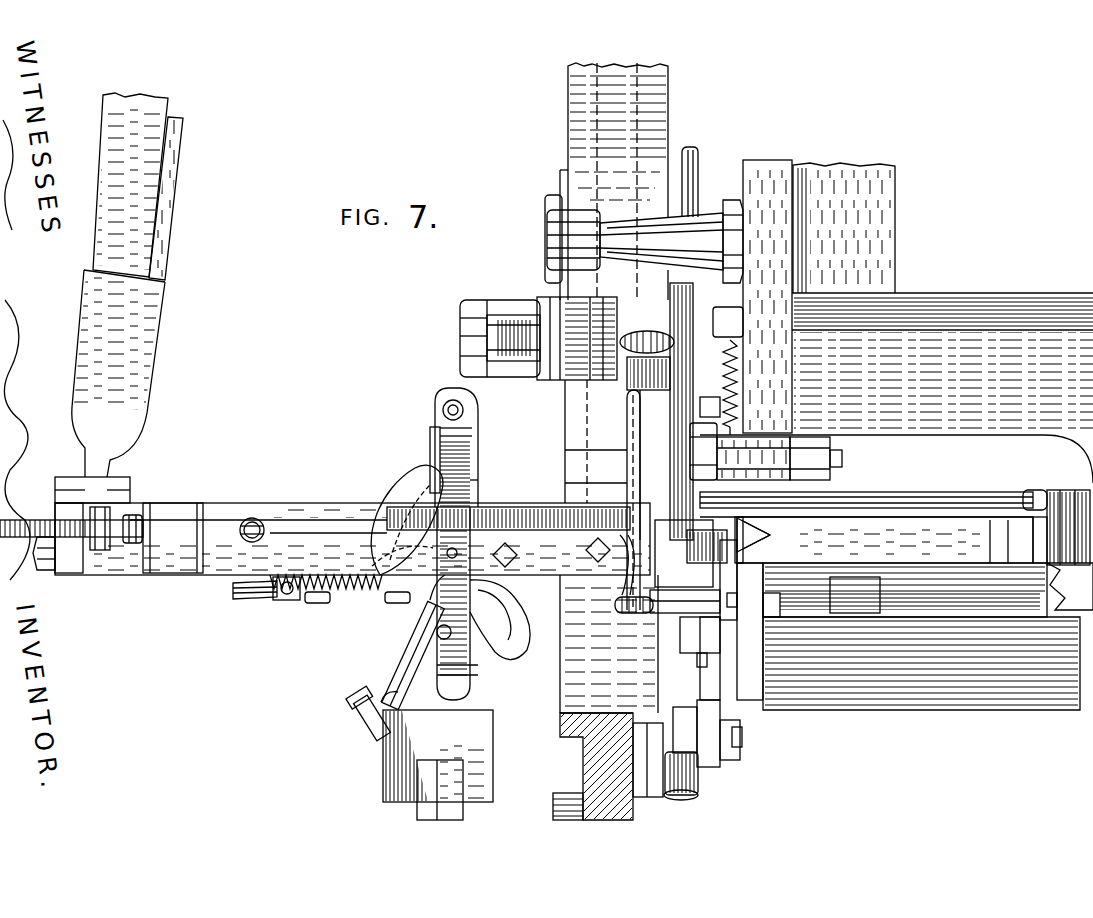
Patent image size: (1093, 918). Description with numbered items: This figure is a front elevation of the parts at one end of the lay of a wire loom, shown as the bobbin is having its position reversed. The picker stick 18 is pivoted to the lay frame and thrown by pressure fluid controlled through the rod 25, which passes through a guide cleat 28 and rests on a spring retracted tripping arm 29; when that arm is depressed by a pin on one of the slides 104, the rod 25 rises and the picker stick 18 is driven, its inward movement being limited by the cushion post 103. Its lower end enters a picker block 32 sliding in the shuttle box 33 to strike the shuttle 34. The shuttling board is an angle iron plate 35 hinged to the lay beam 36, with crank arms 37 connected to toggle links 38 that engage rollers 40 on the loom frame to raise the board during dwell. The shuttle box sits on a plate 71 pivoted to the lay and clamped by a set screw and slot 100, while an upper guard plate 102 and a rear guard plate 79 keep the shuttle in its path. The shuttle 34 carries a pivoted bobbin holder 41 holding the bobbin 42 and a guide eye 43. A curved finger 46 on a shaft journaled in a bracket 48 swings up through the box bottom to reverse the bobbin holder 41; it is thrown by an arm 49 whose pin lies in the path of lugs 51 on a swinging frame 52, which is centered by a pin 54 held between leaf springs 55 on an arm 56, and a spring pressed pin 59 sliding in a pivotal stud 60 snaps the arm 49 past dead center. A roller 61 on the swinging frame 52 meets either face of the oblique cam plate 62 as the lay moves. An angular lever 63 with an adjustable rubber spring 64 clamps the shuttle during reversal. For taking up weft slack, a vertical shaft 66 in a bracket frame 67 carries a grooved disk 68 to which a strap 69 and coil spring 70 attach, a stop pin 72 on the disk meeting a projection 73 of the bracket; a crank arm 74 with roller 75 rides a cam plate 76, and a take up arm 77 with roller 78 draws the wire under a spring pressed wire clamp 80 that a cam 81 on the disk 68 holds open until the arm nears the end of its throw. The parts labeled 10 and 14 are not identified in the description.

The column 10 is at (568, 117).
The block 14 is at (880, 217).
The picker stick 18 is at (170, 105).
The rod 25 is at (700, 152).
The guide cleat 28 is at (748, 302).
The tripping arm 29 is at (740, 406).
The picker block 32 is at (128, 493).
The shuttle box 33 is at (312, 512).
The shuttle 34 is at (520, 512).
The angle iron plate 35 is at (935, 705).
The lay beam 36 is at (990, 298).
The crank arms 37 is at (896, 620).
The toggle links 38 is at (722, 718).
The rollers 40 is at (690, 715).
The bobbin holder 41 is at (447, 395).
The bobbin 42 is at (472, 492).
The guide eye 43 is at (458, 670).
The curved finger 46 is at (408, 484).
The bracket 48 is at (345, 592).
The arm 49 is at (480, 412).
The lugs 51 is at (498, 606).
The swinging frame 52 is at (415, 657).
The pin 54 is at (400, 675).
The leaf springs 55 is at (428, 630).
The arm 56 is at (432, 445).
The spring pressed pin 59 is at (250, 598).
The pivotal stud 60 is at (284, 600).
The roller 61 is at (360, 708).
The cam plate 62 is at (495, 722).
The angular lever 63 is at (218, 522).
The adjustable means 64 is at (140, 545).
The vertical shaft 66 is at (640, 446).
The bracket frame 67 is at (630, 468).
The grooved disk 68 is at (665, 612).
The strap 69 is at (618, 603).
The coil spring 70 is at (680, 625).
The plate 71 is at (697, 660).
The stop pin 72 is at (658, 560).
The projection 73 is at (470, 672).
The crank arm 74 is at (665, 385).
The roller 75 is at (632, 331).
The cam plate 76 is at (568, 372).
The take up arm 77 is at (940, 495).
The roller 78 is at (1068, 520).
The rear guard plate 79 is at (970, 530).
The wire clamp 80 is at (765, 537).
The cam 81 is at (745, 595).
The set screw and slot 100 is at (680, 618).
The upper guard plate 102 is at (850, 500).
The cushion post 103 is at (547, 243).
The slide 104 is at (176, 207).